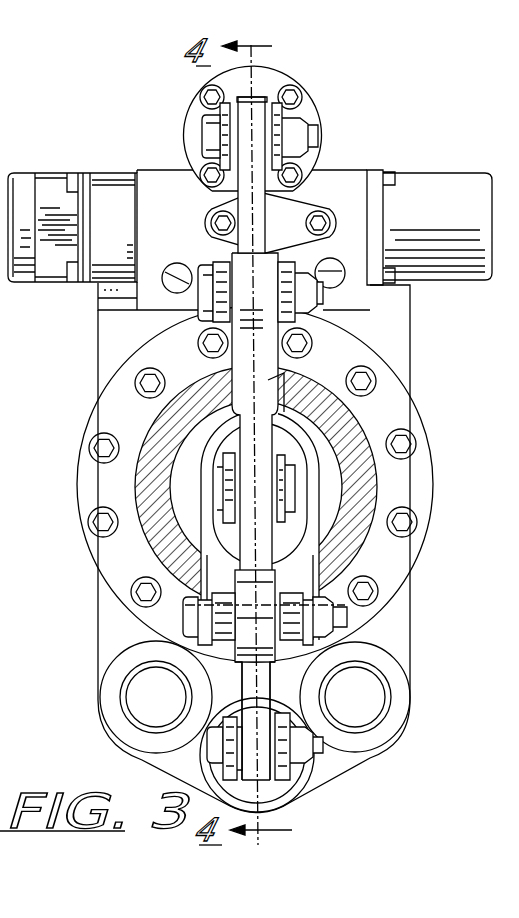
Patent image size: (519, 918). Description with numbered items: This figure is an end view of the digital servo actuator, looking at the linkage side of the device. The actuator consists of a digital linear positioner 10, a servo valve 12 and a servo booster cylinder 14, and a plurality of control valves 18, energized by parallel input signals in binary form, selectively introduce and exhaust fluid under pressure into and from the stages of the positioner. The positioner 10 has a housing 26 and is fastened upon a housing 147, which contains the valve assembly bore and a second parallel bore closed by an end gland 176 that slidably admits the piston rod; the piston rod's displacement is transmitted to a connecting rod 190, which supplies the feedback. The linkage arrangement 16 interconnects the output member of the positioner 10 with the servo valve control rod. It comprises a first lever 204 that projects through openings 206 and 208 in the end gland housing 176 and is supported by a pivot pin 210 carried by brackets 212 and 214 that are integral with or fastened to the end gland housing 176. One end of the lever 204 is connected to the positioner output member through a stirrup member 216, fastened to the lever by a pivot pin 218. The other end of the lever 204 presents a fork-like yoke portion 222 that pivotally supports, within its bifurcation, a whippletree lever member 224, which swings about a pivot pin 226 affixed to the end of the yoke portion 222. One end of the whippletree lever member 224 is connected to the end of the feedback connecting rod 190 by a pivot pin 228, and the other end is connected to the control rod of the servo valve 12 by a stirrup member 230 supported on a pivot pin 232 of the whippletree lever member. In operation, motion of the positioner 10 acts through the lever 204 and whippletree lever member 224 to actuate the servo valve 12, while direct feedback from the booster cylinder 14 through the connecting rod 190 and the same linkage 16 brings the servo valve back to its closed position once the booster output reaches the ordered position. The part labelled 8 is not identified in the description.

The left cylinder 8 is at (30, 170).
The digital linear positioner 10 is at (322, 101).
The servo valve 12 is at (286, 791).
The servo booster cylinder 14 is at (432, 457).
The linkage arrangement 16 is at (201, 478).
The control valves 18 is at (428, 170).
The housing 26 is at (325, 175).
The housing 147 is at (405, 335).
The end gland 176 is at (408, 548).
The connecting rod 190 is at (292, 446).
The first lever 204 is at (240, 370).
The opening 206 is at (285, 382).
The opening 208 is at (292, 574).
The pivot pin 210 is at (199, 298).
The bracket 212 is at (220, 323).
The bracket 214 is at (302, 319).
The stirrup member 216 is at (219, 108).
The pivot pin 218 is at (208, 128).
The yoke portion 222 is at (318, 412).
The whippletree lever member 224 is at (245, 683).
The pivot pin 226 is at (183, 616).
The pivot pin 228 is at (221, 489).
The stirrup member 230 is at (300, 708).
The pivot pin 232 is at (212, 750).